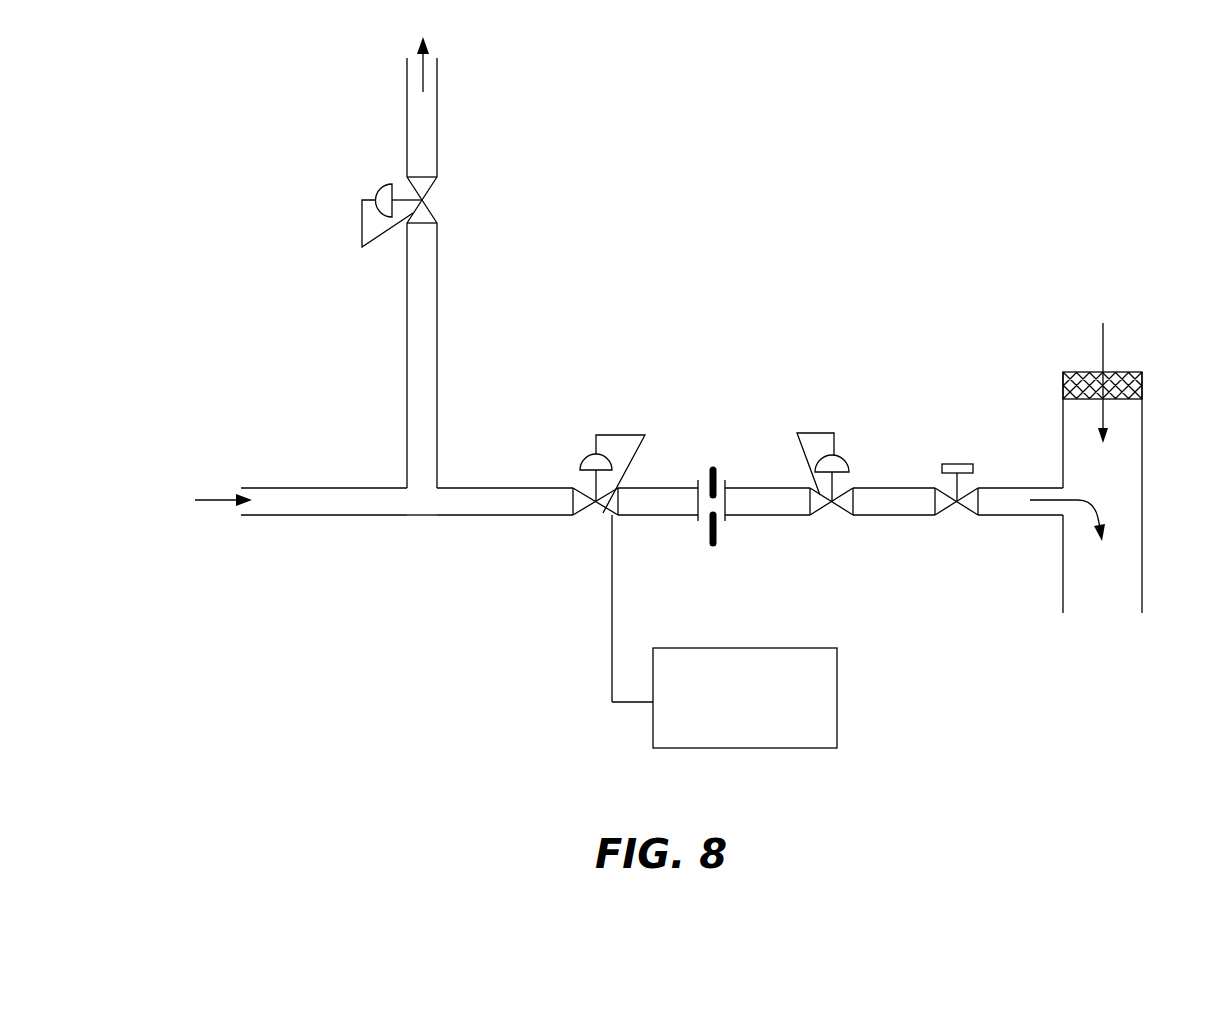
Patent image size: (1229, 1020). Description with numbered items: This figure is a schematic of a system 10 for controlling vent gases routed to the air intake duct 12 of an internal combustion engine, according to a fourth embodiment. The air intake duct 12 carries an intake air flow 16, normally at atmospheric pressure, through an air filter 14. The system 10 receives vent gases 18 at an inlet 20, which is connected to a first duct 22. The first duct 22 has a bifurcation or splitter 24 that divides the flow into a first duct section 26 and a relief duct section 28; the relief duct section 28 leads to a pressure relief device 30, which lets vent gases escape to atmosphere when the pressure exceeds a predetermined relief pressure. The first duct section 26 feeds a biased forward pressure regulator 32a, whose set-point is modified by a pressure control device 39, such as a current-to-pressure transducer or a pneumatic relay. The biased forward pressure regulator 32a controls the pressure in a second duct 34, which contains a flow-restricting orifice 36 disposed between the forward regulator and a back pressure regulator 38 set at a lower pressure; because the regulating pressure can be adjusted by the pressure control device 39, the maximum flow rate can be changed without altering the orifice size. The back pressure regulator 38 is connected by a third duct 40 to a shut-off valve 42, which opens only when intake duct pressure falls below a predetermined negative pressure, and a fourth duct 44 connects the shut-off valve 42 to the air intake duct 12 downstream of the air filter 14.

The system 10 is at (822, 156).
The air intake duct 12 is at (1142, 500).
The air filter 14 is at (1142, 390).
The intake air flow 16 is at (1103, 352).
The vent gases 18 is at (196, 501).
The inlet 20 is at (260, 515).
The first duct 22 is at (350, 515).
The bifurcation or splitter 24 is at (418, 501).
The first duct section 26 is at (518, 515).
The relief duct section 28 is at (406, 431).
The pressure relief device 30 is at (438, 213).
The biased forward pressure regulator 32a is at (605, 512).
The second duct 34 is at (682, 487).
The flow-restricting orifice 36 is at (709, 520).
The back pressure regulator 38 is at (845, 511).
The pressure control device 39 is at (837, 703).
The third duct 40 is at (900, 517).
The shut-off valve 42 is at (963, 464).
The fourth duct 44 is at (1018, 517).